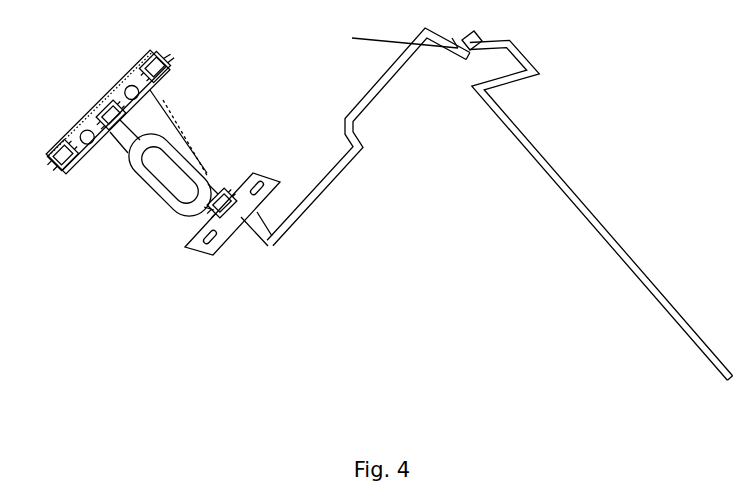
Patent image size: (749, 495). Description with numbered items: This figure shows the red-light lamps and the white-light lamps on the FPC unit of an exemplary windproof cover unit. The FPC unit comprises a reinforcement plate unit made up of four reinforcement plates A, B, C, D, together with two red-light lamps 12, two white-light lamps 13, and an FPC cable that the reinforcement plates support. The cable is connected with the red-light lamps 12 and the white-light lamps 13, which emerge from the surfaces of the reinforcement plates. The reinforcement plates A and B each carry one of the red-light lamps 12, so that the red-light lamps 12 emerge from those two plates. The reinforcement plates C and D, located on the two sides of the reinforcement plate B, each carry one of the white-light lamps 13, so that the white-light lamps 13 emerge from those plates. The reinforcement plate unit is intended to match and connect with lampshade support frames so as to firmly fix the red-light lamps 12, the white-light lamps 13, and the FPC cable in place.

The red-light lamp 12 is at (127, 63).
The white-light lamp 13 is at (172, 78).
The reinforcement plate A is at (233, 203).
The reinforcement plate B is at (107, 107).
The reinforcement plate C is at (158, 65).
The reinforcement plate D is at (68, 157).